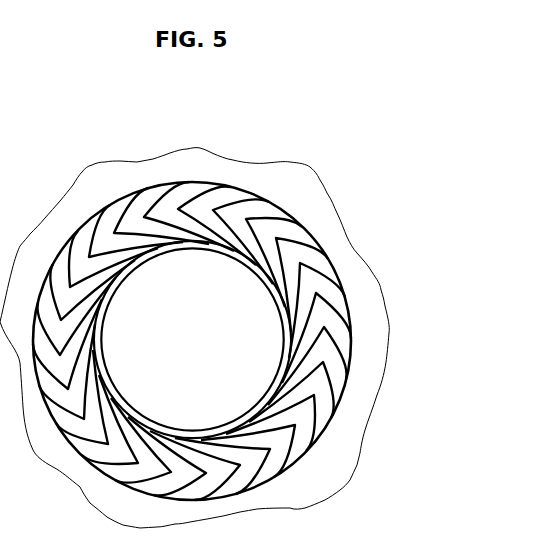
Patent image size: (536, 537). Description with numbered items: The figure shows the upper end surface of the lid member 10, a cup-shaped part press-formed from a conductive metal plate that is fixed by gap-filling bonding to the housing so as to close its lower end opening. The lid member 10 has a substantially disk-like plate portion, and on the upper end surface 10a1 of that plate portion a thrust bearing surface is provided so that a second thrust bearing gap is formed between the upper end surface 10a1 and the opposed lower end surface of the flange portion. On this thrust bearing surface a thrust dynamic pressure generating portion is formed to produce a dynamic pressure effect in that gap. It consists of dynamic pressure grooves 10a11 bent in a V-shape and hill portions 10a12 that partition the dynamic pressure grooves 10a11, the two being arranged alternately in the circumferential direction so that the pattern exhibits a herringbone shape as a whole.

The lid member 10 is at (359, 452).
The upper end surface of the plate portion 10a1 is at (277, 204).
The dynamic pressure grooves 10a11 is at (297, 233).
The hill portions 10a12 is at (343, 336).